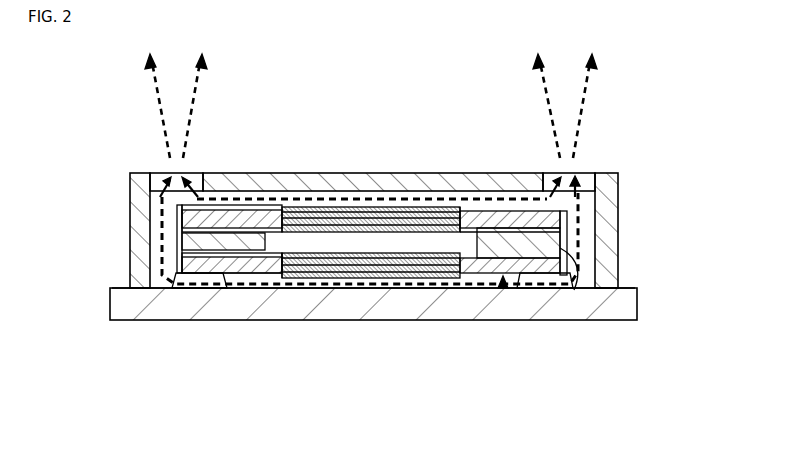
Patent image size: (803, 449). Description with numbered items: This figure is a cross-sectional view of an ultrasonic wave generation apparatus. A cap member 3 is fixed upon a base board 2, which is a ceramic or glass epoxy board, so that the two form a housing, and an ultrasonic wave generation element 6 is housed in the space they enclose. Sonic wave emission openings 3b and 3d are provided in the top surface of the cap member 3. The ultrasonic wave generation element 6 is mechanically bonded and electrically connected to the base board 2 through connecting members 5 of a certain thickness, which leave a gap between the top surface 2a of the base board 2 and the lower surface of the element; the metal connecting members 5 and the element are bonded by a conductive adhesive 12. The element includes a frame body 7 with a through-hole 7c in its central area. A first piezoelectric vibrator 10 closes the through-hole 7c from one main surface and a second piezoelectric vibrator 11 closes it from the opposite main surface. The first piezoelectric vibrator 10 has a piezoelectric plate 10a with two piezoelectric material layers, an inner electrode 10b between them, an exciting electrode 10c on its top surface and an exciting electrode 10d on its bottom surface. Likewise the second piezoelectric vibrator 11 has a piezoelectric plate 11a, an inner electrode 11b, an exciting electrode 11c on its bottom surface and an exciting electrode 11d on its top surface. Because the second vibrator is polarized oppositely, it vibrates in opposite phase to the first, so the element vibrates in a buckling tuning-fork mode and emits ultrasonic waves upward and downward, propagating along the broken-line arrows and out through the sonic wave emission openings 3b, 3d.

The base board 2 is at (113, 303).
The top surface of the base board 2a is at (372, 289).
The cap member 3 is at (124, 212).
The sonic wave emission opening 3b is at (585, 177).
The sonic wave emission opening 3d is at (158, 178).
The connecting member 5 is at (187, 288).
The ultrasonic wave generation element 6 is at (503, 290).
The frame body 7 is at (173, 232).
The through-hole 7c is at (268, 246).
The first piezoelectric vibrator 10 is at (371, 151).
The piezoelectric plate 10a is at (484, 211).
The inner electrode 10b is at (467, 212).
The exciting electrode 10c is at (325, 207).
The exciting electrode 10d is at (310, 230).
The second piezoelectric vibrator 11 is at (371, 332).
The piezoelectric plate 11a is at (477, 280).
The inner electrode 11b is at (335, 268).
The exciting electrode 11c is at (343, 283).
The exciting electrode 11d is at (318, 256).
The conductive adhesive 12 is at (172, 278).